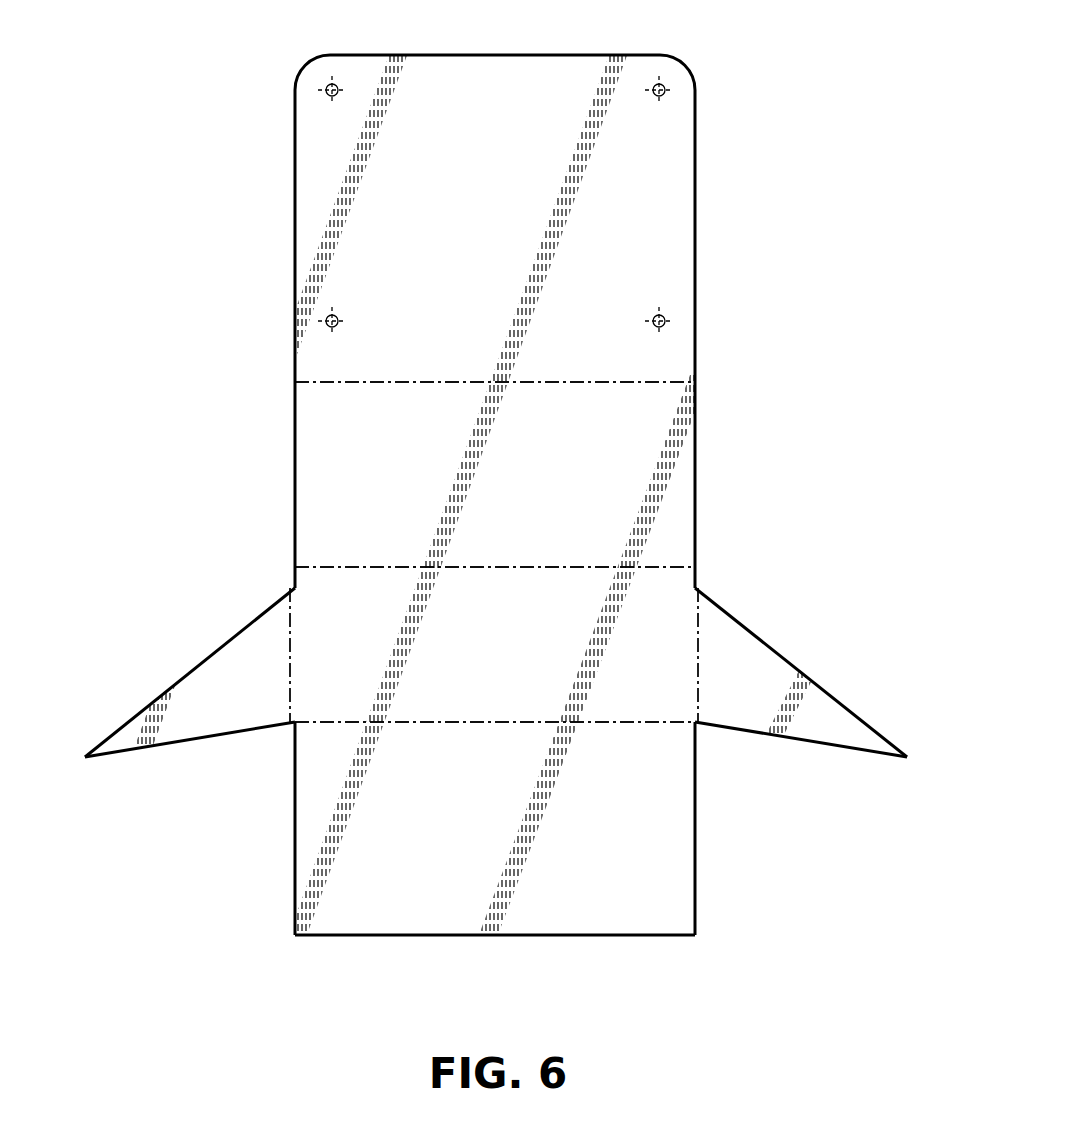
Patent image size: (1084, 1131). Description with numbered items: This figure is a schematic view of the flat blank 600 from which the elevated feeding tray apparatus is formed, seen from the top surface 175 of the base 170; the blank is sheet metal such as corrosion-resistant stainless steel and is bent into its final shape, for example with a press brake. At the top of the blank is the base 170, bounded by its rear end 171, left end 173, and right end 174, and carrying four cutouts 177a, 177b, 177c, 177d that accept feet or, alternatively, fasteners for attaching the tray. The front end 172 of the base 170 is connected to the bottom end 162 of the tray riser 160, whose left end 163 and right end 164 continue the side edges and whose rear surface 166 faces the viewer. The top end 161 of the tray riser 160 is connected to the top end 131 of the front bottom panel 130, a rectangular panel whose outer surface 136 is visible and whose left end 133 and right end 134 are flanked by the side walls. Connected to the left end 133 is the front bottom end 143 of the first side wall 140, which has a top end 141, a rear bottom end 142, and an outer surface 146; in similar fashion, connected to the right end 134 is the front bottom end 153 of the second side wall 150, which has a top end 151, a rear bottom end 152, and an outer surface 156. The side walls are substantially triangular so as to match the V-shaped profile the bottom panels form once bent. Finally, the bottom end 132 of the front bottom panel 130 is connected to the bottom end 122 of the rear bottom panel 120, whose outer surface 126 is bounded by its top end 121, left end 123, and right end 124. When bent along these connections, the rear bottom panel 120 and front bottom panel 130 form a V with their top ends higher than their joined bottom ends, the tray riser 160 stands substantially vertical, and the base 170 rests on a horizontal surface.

The blank 600 is at (503, 520).
The rear bottom panel 120 is at (470, 529).
The top end of rear bottom panel 121 is at (478, 922).
The bottom end of rear bottom panel 122 is at (478, 737).
The left end of rear bottom panel 123 is at (310, 830).
The right end of rear bottom panel 124 is at (677, 827).
The outer surface of rear bottom panel 126 is at (438, 831).
The front bottom panel 130 is at (479, 495).
The top end of front bottom panel 131 is at (490, 575).
The bottom end of front bottom panel 132 is at (492, 717).
The left end of front bottom panel 133 is at (300, 715).
The right end of front bottom panel 134 is at (692, 653).
The outer surface of front bottom panel 136 is at (526, 649).
The first side wall 140 is at (446, 495).
The top end of first side wall 141 is at (182, 672).
The rear bottom end of first side wall 142 is at (197, 740).
The front bottom end of first side wall 143 is at (278, 662).
The outer surface of first side wall 146 is at (255, 705).
The second side wall 150 is at (527, 495).
The top end of second side wall 151 is at (800, 660).
The rear bottom end of second side wall 152 is at (827, 747).
The front bottom end of second side wall 153 is at (707, 663).
The outer surface of second side wall 156 is at (776, 687).
The tray riser 160 is at (470, 495).
The top end of tray riser 161 is at (482, 562).
The bottom end of tray riser 162 is at (473, 397).
The left end of tray riser 163 is at (303, 470).
The right end of tray riser 164 is at (687, 475).
The rear surface of tray riser 166 is at (428, 493).
The base 170 is at (473, 471).
The rear end of base 171 is at (487, 55).
The front end of base 172 is at (488, 375).
The left end of base 173 is at (307, 218).
The right end of base 174 is at (680, 225).
The top surface of base 175 is at (510, 229).
The cutout 177a is at (325, 324).
The cutout 177b is at (332, 90).
The cutout 177c is at (661, 85).
The cutout 177d is at (663, 325).